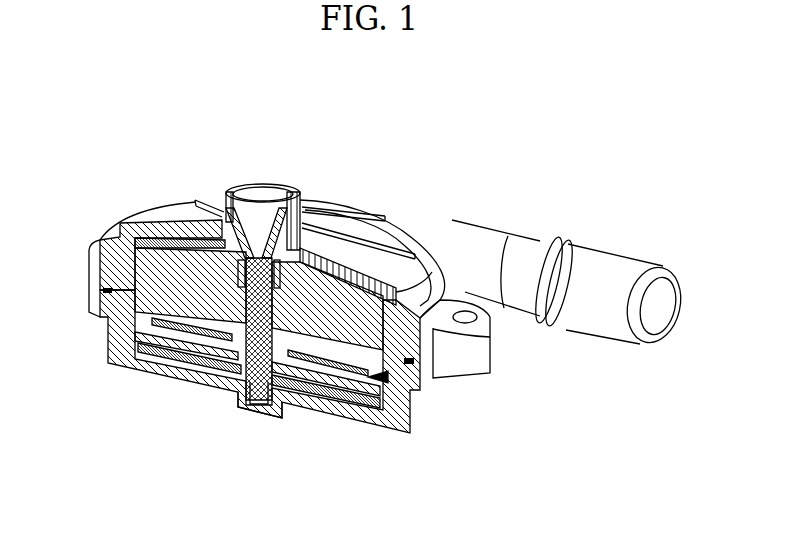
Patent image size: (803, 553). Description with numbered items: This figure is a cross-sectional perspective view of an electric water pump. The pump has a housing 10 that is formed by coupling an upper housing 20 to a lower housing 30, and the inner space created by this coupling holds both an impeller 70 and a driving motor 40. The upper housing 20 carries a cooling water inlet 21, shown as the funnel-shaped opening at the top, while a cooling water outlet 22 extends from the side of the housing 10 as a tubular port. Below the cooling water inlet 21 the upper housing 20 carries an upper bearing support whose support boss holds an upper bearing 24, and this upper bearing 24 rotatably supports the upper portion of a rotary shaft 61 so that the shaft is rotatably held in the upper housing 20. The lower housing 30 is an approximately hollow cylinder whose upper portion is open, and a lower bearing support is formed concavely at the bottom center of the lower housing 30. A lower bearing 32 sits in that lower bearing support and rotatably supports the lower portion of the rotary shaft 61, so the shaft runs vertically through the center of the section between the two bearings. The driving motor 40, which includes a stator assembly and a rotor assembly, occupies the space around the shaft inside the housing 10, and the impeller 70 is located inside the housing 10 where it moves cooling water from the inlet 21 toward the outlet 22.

The housing 10 is at (60, 342).
The upper housing 20 is at (120, 269).
The cooling water inlet 21 is at (262, 200).
The cooling water outlet 22 is at (660, 308).
The upper bearing 24 is at (301, 282).
The lower housing 30 is at (118, 337).
The lower bearing 32 is at (267, 405).
The driving motor 40 is at (390, 378).
The rotary shaft 61 is at (236, 384).
The impeller 70 is at (330, 303).